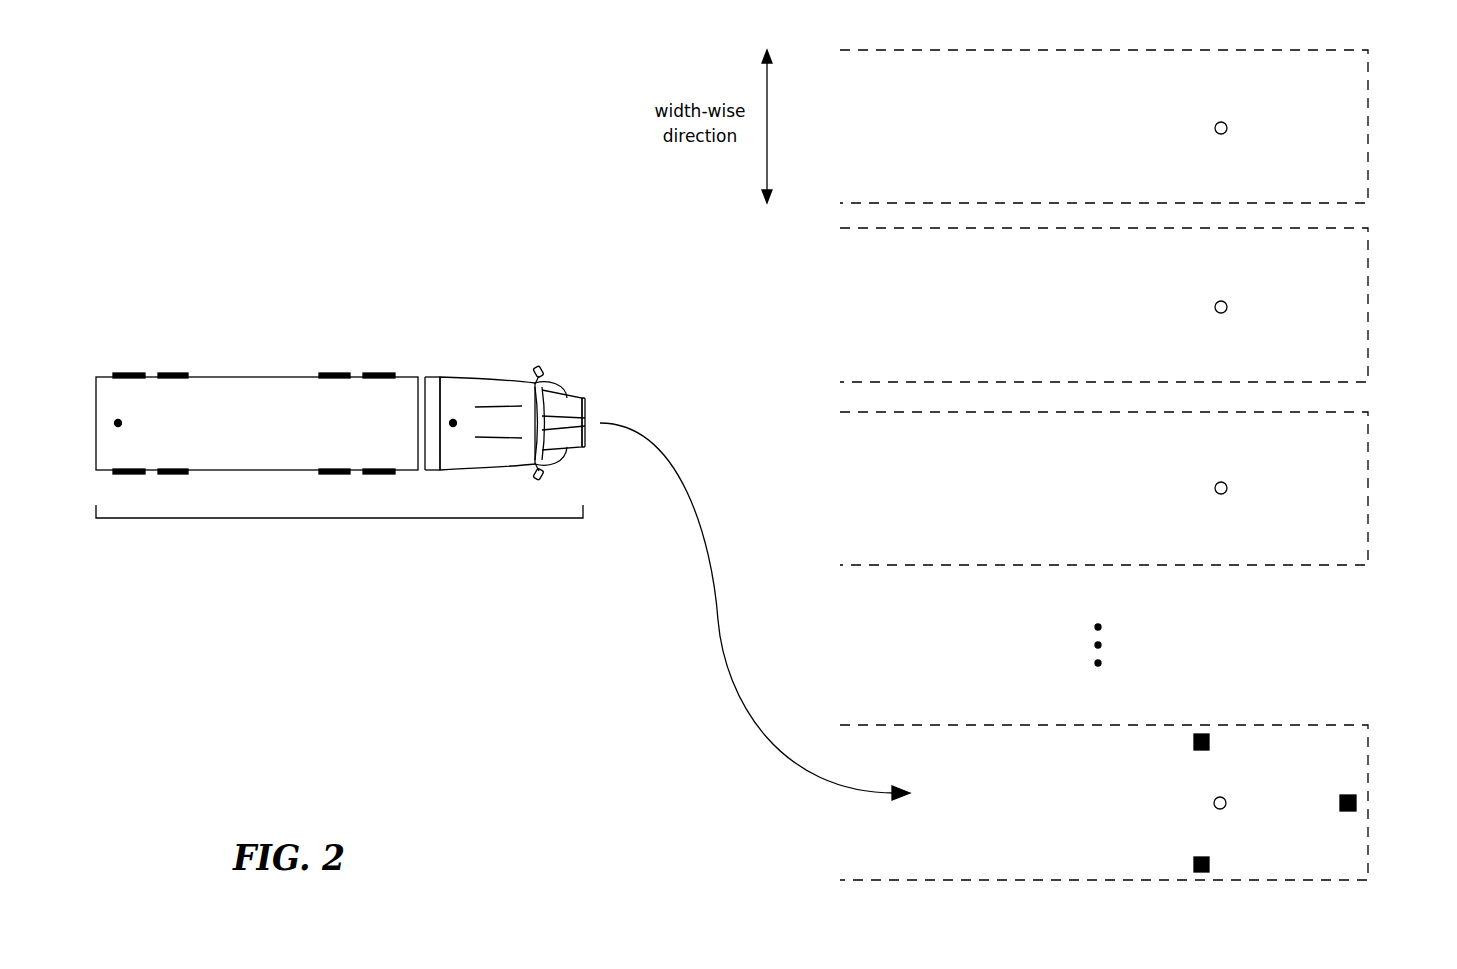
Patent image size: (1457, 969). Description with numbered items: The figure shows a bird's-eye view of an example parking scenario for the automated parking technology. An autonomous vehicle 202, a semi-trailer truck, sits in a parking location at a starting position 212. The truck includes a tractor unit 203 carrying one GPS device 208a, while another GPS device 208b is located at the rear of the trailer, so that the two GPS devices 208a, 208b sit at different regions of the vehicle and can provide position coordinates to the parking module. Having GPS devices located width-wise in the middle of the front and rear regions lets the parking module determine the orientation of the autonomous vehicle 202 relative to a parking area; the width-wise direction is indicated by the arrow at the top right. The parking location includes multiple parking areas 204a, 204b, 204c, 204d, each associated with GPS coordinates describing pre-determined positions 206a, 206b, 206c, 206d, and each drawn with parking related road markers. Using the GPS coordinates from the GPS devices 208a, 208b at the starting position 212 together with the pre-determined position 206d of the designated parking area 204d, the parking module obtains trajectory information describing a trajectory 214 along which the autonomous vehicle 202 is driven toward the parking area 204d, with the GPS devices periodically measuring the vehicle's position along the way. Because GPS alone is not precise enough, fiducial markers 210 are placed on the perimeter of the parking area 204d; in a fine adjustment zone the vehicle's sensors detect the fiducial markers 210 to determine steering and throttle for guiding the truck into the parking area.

The autonomous vehicle 202 is at (516, 365).
The tractor unit 203 is at (346, 436).
The parking area 204a is at (1369, 88).
The parking area 204b is at (1369, 267).
The parking area 204c is at (1369, 450).
The parking area 204d is at (1369, 765).
The pre-determined position 206a is at (1227, 128).
The pre-determined position 206b is at (1227, 307).
The pre-determined position 206c is at (1227, 488).
The pre-determined position 206d is at (1226, 803).
The GPS device 208a is at (453, 421).
The GPS device 208b is at (120, 424).
The fiducial marker 210 is at (1197, 750).
The starting position 212 is at (347, 519).
The trajectory 214 is at (717, 607).